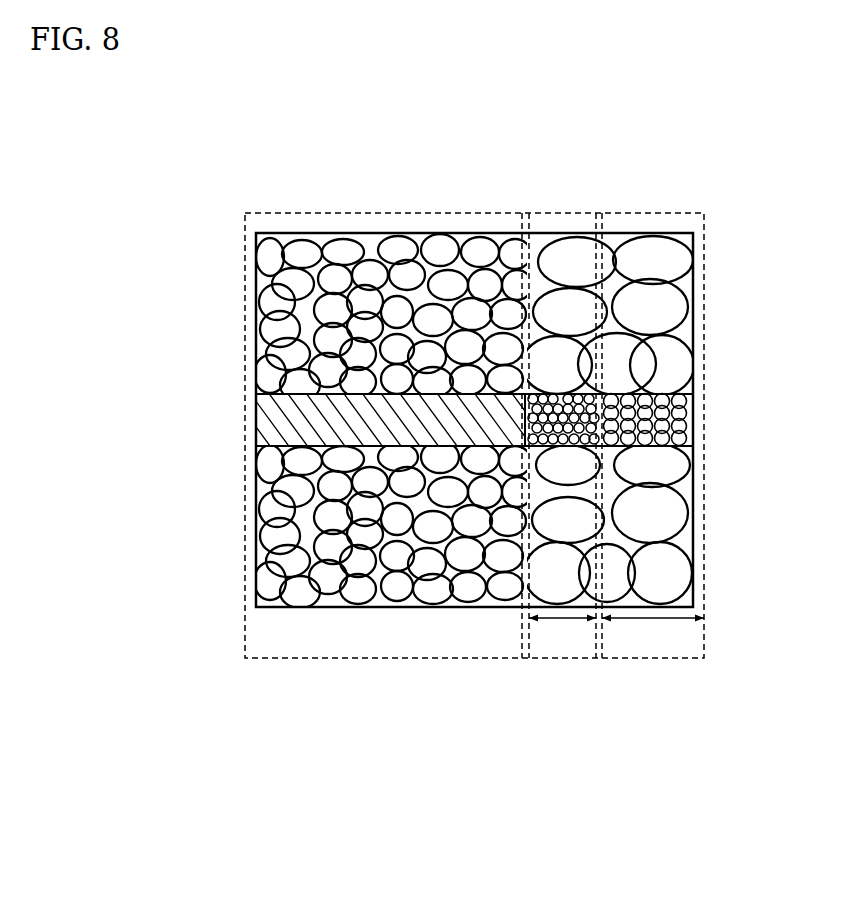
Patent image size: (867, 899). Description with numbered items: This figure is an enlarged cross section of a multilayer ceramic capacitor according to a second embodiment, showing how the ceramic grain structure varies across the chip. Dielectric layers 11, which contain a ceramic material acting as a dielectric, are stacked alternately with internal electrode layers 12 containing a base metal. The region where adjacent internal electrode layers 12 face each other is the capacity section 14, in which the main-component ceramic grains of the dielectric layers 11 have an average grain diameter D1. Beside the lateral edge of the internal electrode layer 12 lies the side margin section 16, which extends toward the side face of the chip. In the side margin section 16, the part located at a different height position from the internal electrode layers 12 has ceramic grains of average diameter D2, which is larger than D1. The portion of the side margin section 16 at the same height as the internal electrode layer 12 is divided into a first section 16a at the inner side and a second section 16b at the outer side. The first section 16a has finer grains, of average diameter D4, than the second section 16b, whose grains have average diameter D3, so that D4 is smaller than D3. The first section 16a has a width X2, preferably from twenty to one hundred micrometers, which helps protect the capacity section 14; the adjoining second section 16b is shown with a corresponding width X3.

The dielectric layer 11 is at (273, 298).
The internal electrode layer 12 is at (272, 418).
The capacity section 14 is at (386, 659).
The side margin section 16 is at (608, 494).
The first section 16a is at (557, 659).
The second section 16b is at (636, 467).
The average grain diameter of ceramic grains in the capacity section D1 is at (442, 250).
The average grain diameter of ceramic grains at a different height from the internal D2 is at (655, 250).
The average grain diameter of ceramic grains in the second section D3 is at (684, 425).
The average grain diameter of ceramic grains in the first section D4 is at (568, 396).
The width of the first section X2 is at (562, 635).
The width of second end region X3 is at (653, 635).